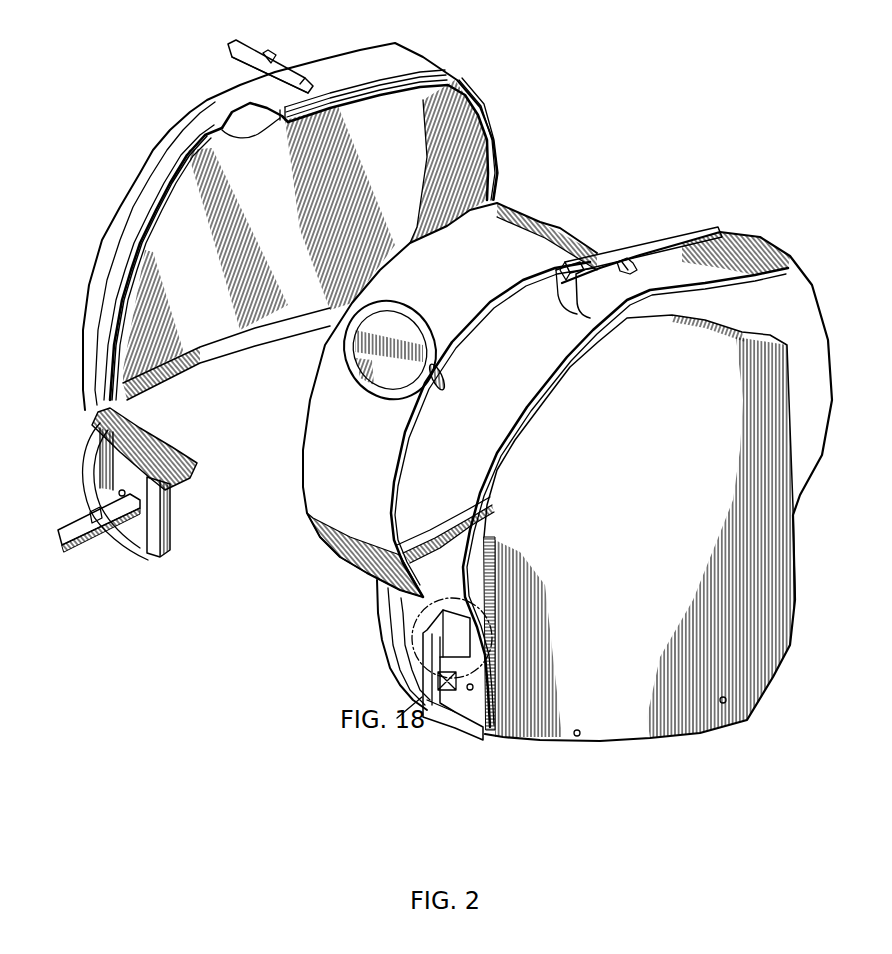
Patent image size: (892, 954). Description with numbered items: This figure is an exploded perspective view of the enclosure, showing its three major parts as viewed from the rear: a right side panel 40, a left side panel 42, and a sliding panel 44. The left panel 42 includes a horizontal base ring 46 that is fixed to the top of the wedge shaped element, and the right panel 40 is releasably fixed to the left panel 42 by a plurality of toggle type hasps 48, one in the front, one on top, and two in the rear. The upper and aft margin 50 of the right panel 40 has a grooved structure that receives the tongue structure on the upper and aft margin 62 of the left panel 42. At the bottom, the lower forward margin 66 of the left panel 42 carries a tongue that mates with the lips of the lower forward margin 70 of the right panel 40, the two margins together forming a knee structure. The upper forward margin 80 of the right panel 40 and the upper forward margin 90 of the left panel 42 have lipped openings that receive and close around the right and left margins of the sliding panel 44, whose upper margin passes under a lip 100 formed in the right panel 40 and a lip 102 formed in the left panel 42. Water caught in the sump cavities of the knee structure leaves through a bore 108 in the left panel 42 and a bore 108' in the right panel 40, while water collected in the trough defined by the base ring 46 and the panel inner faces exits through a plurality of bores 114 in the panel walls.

The right side panel 40 is at (398, 44).
The left side panel 42 is at (767, 250).
The sliding panel 44 is at (547, 223).
The horizontal base ring 46 is at (380, 617).
The toggle type hasps 48 is at (245, 43).
The upper and aft margin of the right panel 50 is at (495, 124).
The upper and aft margin of the left panel 62 is at (667, 240).
The lower forward margin of the left panel 66 is at (423, 653).
The lower forward margin of the right panel 70 is at (163, 530).
The upper forward margin of the right panel 80 is at (157, 182).
The upper forward margin of the left panel 90 is at (493, 430).
The lip 100 is at (210, 127).
The lip 102 is at (580, 247).
The bore or conduit 108 is at (455, 733).
The bore 108' is at (85, 503).
The bores or conduits 114 is at (577, 736).